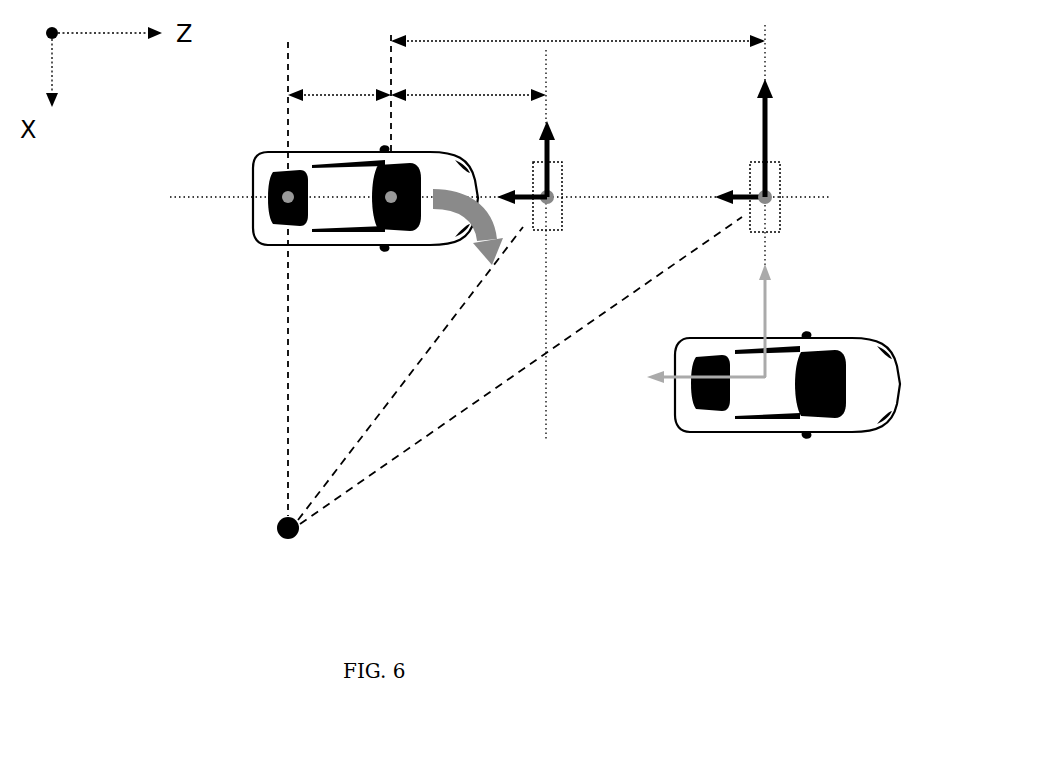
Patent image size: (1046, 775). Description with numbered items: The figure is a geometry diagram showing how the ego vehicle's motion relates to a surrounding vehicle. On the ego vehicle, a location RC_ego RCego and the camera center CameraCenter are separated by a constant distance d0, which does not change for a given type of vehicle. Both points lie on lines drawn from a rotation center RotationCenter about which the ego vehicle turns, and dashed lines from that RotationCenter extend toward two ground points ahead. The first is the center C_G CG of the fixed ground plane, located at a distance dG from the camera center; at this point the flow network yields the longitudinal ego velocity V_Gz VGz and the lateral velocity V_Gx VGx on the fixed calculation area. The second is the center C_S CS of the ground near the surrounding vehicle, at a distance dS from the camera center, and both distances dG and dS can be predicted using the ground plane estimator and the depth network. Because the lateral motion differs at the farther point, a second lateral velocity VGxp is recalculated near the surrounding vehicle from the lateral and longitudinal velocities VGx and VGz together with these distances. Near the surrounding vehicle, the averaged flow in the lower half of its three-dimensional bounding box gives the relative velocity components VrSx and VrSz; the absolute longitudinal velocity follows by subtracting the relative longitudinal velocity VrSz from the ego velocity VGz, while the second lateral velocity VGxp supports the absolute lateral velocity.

The RC_ego RCego is at (285, 200).
The camera center CameraCenter is at (390, 205).
The rotation center RotationCenter is at (453, 398).
The center of the fixed ground plane CG is at (566, 208).
The center of the ground near the surrounding vehicle CS is at (784, 208).
The lateral velocity VGx is at (570, 159).
The longitudinal ego velocity VGz is at (621, 176).
The second lateral velocity VGxp is at (796, 137).
The relative lateral velocity of the surrounding vehicle VrSx is at (800, 320).
The relative longitudinal velocity of the surrounding vehicle VrSz is at (679, 392).
The distance between the camera center and C_S dS is at (578, 23).
The distance between RC_ego and the camera center d0 is at (339, 79).
The distance between the camera center and C_G dG is at (468, 79).